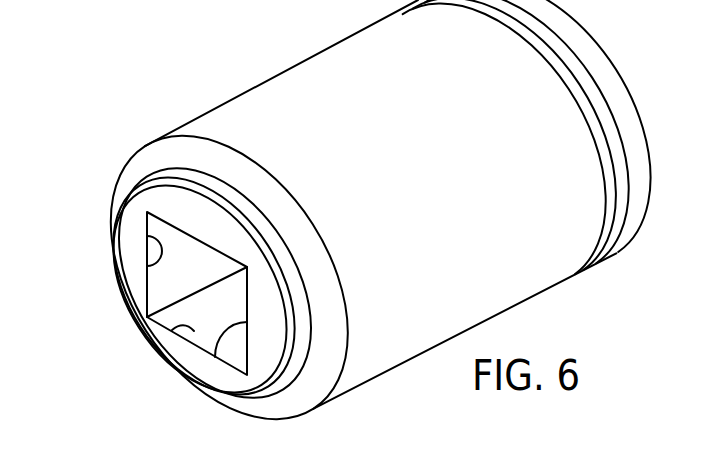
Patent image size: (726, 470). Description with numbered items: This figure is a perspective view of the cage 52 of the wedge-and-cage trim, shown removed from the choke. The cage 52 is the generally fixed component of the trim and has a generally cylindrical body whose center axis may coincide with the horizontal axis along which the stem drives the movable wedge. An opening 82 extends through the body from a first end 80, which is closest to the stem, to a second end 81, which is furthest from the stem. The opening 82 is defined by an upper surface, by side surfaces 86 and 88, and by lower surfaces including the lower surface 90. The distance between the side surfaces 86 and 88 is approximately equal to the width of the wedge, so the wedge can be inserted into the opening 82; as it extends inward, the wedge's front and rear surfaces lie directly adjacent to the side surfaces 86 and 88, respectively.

The cage 52 is at (155, 108).
The first end 80 is at (186, 404).
The second end 81 is at (660, 74).
The opening 82 is at (170, 283).
The side surface 86 is at (216, 356).
The side surface 88 is at (158, 256).
The lower surface 90 is at (177, 328).